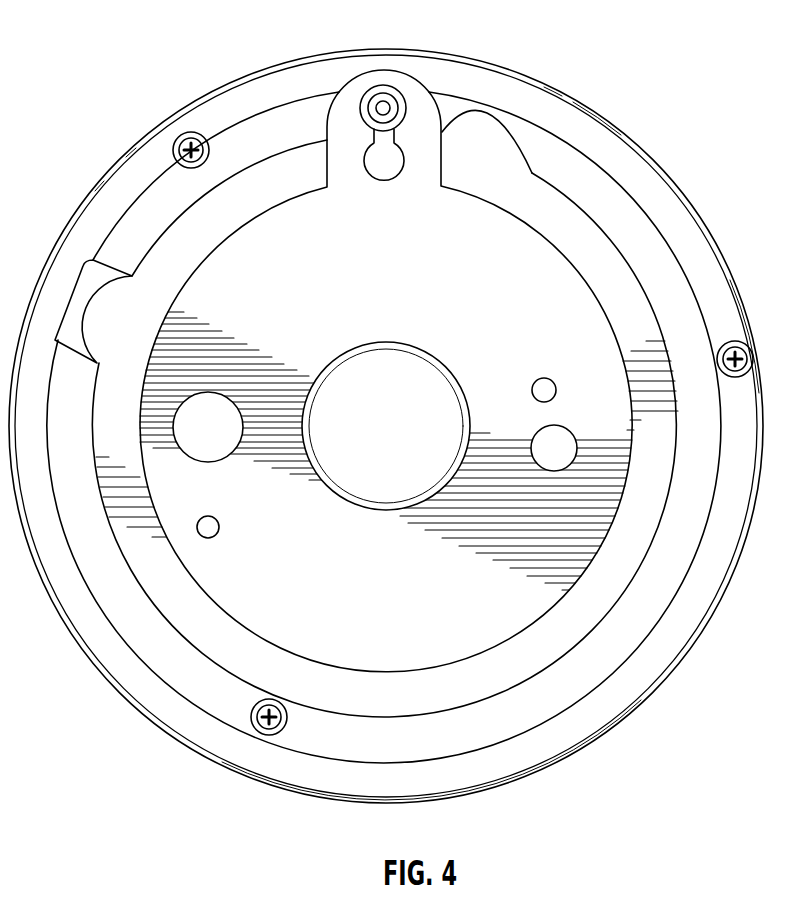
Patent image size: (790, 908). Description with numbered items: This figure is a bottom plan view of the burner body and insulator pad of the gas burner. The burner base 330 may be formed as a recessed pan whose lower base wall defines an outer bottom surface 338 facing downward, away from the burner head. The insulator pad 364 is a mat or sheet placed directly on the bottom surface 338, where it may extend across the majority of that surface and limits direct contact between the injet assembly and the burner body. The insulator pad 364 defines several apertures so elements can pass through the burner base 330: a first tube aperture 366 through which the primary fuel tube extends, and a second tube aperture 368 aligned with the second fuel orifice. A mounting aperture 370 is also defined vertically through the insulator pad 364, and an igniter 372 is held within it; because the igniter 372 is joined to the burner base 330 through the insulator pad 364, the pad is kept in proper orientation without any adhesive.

The burner base 330 is at (639, 182).
The outer bottom surface 338 is at (207, 633).
The insulator pad 364 is at (478, 643).
The first tube aperture 366 is at (425, 485).
The second tube aperture 368 is at (208, 395).
The mounting aperture 370 is at (397, 163).
The igniter 372 is at (402, 105).